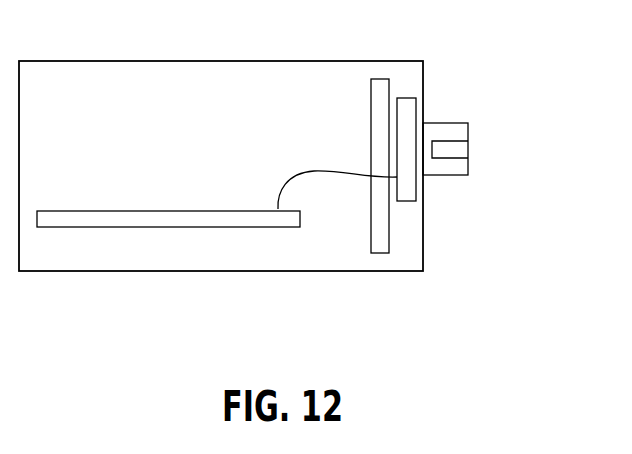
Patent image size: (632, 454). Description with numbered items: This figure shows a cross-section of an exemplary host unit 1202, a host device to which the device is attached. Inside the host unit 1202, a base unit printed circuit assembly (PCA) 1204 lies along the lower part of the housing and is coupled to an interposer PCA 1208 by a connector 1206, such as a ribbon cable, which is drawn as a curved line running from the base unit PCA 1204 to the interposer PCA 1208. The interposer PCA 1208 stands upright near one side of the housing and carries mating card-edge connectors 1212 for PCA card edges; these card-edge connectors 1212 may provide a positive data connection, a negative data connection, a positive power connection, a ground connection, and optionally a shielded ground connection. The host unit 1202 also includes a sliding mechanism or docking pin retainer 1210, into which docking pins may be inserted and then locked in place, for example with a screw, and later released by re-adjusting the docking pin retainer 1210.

The host unit 1202 is at (123, 61).
The base unit printed circuit assembly 1204 is at (167, 228).
The connector 1206 is at (333, 170).
The interposer PCA 1208 is at (416, 98).
The docking pin retainer 1210 is at (371, 80).
The card-edge connectors 1212 is at (460, 123).